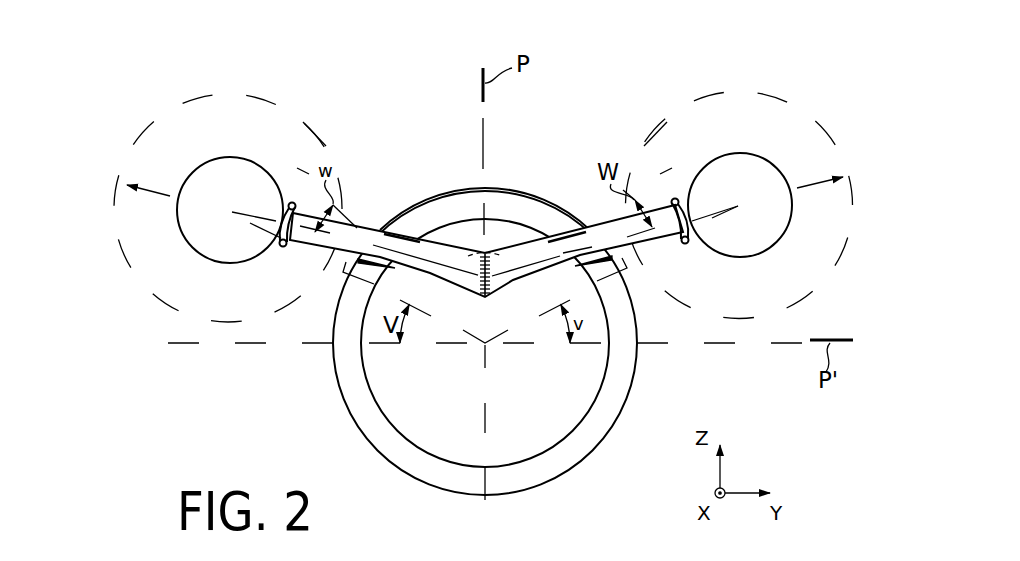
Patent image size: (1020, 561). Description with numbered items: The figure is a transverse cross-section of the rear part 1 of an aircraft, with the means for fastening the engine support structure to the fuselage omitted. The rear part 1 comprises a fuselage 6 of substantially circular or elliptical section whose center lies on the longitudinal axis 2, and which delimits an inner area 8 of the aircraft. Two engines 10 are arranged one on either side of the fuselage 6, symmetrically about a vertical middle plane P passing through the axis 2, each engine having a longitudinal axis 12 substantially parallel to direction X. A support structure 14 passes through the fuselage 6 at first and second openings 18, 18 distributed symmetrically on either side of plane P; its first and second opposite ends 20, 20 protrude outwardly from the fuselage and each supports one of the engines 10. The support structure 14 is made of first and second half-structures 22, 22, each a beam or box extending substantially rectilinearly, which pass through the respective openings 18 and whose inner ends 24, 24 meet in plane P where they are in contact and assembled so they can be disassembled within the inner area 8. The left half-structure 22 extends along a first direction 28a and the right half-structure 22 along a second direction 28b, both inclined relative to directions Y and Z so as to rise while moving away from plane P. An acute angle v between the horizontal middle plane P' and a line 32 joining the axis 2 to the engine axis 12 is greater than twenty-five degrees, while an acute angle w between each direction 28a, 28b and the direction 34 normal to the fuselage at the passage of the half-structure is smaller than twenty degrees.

The rear part 1 is at (523, 118).
The longitudinal axis 2 is at (489, 347).
The fuselage 6 is at (486, 190).
The inner area 8 is at (519, 426).
The engines 10 is at (276, 89).
The longitudinal axis of the engine 12 is at (232, 212).
The support structure 14 is at (446, 244).
The openings 18 is at (383, 231).
The opposite ends 20 is at (291, 203).
The half-structures 22 is at (441, 279).
The inner ends 24 is at (476, 262).
The first direction 28a is at (148, 187).
The second direction 28b is at (822, 176).
The line connecting the fuselage axis and the engine axis 32 is at (342, 270).
The direction normal to the fuselage 34 is at (303, 168).